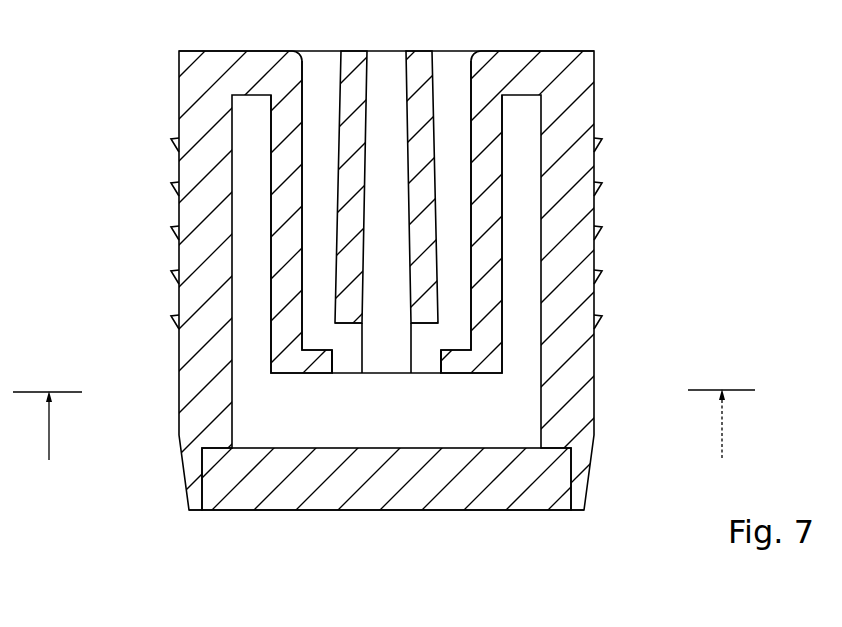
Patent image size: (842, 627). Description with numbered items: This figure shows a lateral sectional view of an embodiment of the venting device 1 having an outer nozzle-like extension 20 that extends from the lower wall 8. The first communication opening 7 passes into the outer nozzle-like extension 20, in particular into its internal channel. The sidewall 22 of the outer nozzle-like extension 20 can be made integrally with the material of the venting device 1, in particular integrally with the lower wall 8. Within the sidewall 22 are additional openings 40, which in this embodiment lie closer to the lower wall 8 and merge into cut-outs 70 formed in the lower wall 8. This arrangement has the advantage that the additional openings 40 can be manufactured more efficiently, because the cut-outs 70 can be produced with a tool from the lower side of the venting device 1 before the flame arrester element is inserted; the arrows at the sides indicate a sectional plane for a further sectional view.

The venting device 1 is at (130, 100).
The outer nozzle-like extension 20 is at (359, 60).
The sidewall 22 is at (343, 187).
The additional openings 40 is at (345, 335).
The cut-outs 70 is at (345, 360).
The first communication opening 7 is at (388, 365).
The lower wall 8 is at (315, 373).